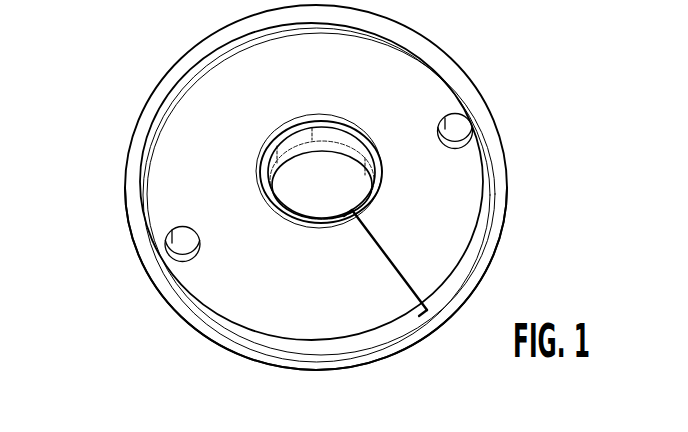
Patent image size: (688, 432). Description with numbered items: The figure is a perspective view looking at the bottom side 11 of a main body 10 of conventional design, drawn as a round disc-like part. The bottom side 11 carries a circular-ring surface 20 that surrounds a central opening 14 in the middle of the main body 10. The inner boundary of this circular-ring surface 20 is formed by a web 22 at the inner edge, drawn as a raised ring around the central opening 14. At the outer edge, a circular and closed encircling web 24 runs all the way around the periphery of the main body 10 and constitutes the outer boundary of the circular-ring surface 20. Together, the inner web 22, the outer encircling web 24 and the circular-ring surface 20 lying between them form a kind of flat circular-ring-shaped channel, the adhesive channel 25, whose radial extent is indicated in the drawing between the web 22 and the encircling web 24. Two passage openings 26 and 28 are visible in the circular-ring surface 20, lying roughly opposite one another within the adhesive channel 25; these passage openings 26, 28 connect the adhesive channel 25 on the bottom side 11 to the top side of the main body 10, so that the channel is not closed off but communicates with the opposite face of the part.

The main body 10 is at (137, 25).
The bottom side 11 is at (443, 218).
The central opening 14 is at (333, 178).
The circular-ring surface 20 is at (299, 297).
The web 22 is at (271, 201).
The encircling web 24 is at (151, 107).
The adhesive channel 25 is at (402, 250).
The passage opening 26 is at (455, 132).
The passage opening 28 is at (176, 248).